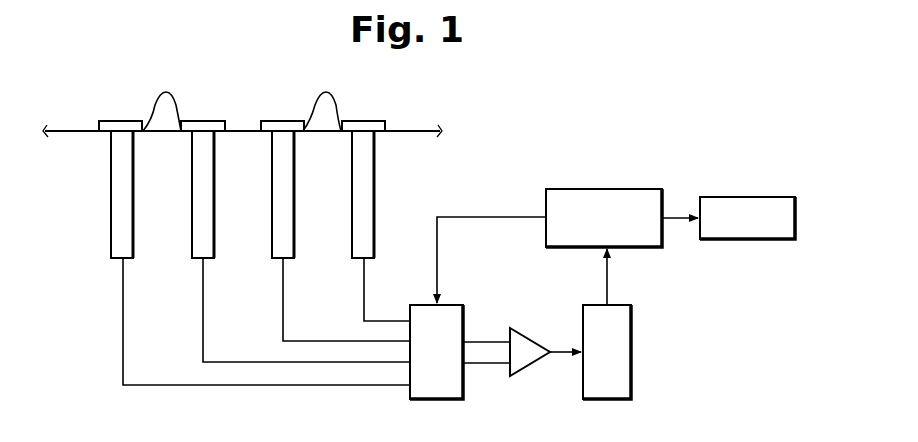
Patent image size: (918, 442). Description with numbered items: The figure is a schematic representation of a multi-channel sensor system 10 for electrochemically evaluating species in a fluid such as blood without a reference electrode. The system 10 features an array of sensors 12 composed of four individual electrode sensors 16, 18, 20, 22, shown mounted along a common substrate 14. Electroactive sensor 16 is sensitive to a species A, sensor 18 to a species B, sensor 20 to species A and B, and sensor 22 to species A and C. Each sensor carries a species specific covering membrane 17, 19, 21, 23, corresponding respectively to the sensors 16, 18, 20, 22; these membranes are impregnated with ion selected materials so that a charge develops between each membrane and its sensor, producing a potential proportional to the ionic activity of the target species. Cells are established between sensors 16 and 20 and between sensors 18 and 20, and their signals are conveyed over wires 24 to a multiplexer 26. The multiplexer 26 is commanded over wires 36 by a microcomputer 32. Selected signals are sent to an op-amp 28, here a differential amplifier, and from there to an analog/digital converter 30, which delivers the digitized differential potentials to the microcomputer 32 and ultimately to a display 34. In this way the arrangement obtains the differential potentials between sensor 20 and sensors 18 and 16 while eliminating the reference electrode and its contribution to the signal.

The multi-channel sensor system 10 is at (521, 126).
The array of sensors 12 is at (155, 100).
The substrate 14 is at (72, 131).
The electroactive sensor 16 is at (117, 180).
The species specific covering membrane 17 is at (122, 121).
The sensor 18 is at (198, 185).
The species specific covering membrane 19 is at (200, 121).
The sensor 20 is at (278, 183).
The species specific covering membrane 21 is at (282, 121).
The sensor 22 is at (357, 185).
The species specific covering membrane 23 is at (362, 121).
The wires 24 is at (377, 321).
The multiplexer 26 is at (460, 308).
The op-amp 28 is at (528, 334).
The analog/digital converter 30 is at (634, 368).
The microcomputer 32 is at (604, 188).
The display 34 is at (752, 196).
The wires 36 is at (496, 216).